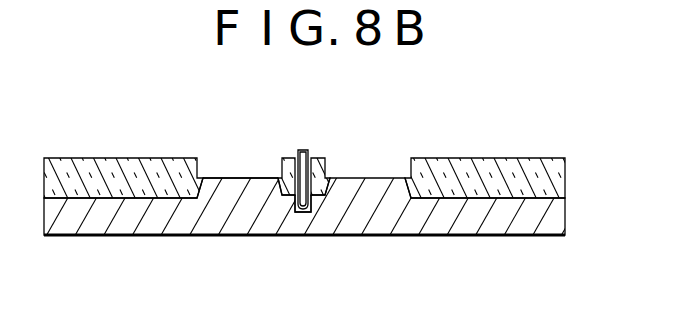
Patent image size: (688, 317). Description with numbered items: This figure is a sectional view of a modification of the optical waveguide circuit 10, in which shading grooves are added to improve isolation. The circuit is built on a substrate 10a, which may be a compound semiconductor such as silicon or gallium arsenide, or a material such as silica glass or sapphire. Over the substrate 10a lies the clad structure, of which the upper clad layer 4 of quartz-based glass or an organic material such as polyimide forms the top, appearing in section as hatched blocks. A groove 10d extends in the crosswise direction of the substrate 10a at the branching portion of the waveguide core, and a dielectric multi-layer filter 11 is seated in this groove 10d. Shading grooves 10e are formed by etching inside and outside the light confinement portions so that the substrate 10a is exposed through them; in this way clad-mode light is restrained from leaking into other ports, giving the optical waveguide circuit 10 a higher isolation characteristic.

The upper clad layer 4 is at (110, 164).
The optical waveguide circuit 10 is at (372, 166).
The substrate 10a is at (379, 236).
The groove 10d is at (303, 212).
The shading grooves 10e is at (249, 176).
The dielectric multi-layer filter 11 is at (304, 150).